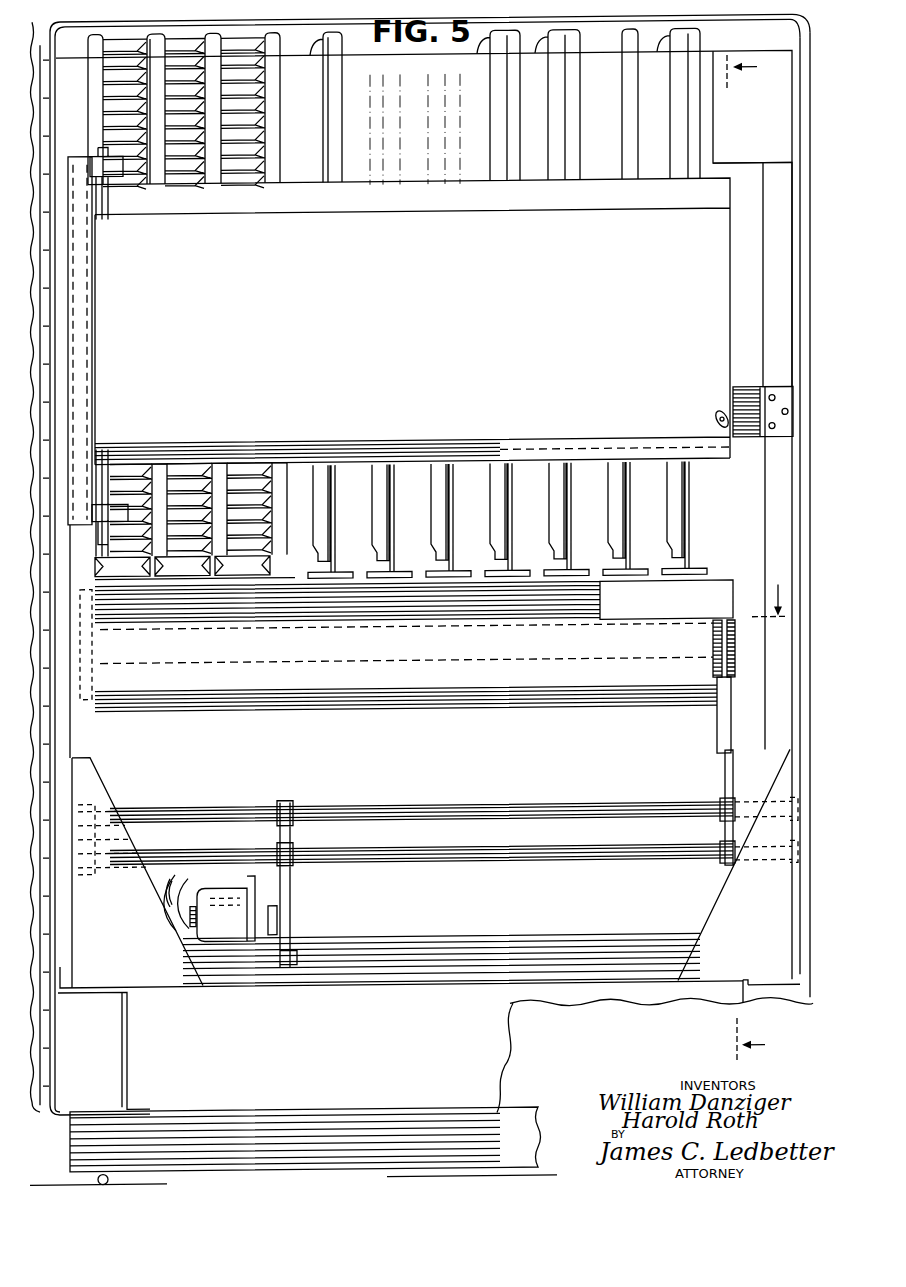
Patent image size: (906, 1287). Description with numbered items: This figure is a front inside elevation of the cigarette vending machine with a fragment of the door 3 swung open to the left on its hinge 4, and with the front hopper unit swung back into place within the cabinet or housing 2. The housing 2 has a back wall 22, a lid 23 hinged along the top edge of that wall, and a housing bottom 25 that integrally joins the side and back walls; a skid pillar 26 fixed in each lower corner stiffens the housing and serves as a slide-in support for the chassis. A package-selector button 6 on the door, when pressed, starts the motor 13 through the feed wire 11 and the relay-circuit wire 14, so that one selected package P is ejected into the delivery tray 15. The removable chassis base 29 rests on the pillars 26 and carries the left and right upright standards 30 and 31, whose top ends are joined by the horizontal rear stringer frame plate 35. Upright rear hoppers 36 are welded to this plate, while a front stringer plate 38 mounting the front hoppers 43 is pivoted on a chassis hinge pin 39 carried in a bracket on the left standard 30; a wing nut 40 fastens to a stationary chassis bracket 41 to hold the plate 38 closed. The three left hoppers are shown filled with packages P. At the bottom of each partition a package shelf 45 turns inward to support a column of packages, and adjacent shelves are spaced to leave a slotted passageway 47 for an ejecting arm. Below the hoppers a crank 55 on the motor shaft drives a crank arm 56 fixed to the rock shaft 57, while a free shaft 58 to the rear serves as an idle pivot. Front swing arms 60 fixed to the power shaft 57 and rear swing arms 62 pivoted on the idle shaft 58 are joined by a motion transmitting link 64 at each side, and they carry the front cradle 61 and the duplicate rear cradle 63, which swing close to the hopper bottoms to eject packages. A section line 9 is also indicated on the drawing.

The cabinet or housing 2 is at (56, 336).
The door 3 is at (35, 70).
The door hinge 4 is at (46, 132).
The package-selector electrical-switch button 6 is at (746, 559).
The section line 9 is at (769, 587).
The feed wire 11 is at (165, 902).
The motor 13 is at (213, 930).
The relay-circuit wire 14 is at (172, 917).
The delivery tray 15 is at (394, 712).
The back wall 22 is at (438, 772).
The lid 23 is at (720, 22).
The housing bottom 25 is at (370, 1112).
The skid pillar 26 is at (100, 995).
The chassis base 29 is at (390, 952).
The left upright standard 30 is at (92, 250).
The right upright standard 31 is at (780, 200).
The rear stringer frame plate 35 is at (738, 178).
The rear hoppers 36 is at (716, 117).
The front stringer plate 38 is at (398, 322).
The chassis hinge pin 39 is at (108, 198).
The wing nut 40 is at (724, 440).
The chassis bracket 41 is at (747, 412).
The front hoppers 43 is at (383, 160).
The package shelf 45 is at (640, 580).
The slotted passageway 47 is at (590, 580).
The crank 55 is at (296, 931).
The crank arm 56 is at (292, 895).
The rock shaft 57 is at (345, 787).
The free shaft 58 is at (485, 862).
The front swing arms 60 is at (105, 795).
The cradle 61 is at (714, 590).
The rear swing arms 62 is at (96, 846).
The rear cradle 63 is at (728, 640).
The motion transmitting link 64 is at (100, 735).
The package P is at (245, 178).